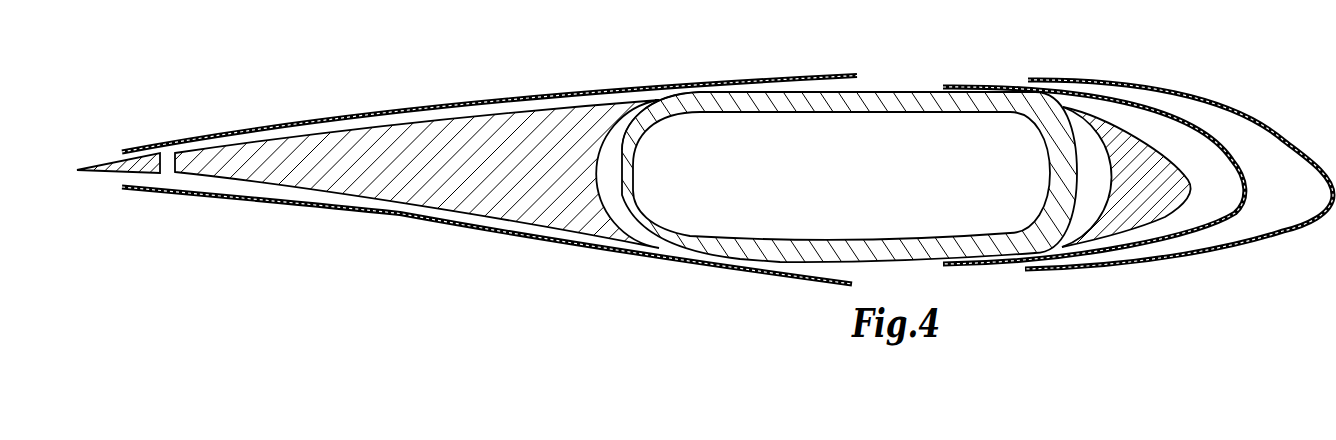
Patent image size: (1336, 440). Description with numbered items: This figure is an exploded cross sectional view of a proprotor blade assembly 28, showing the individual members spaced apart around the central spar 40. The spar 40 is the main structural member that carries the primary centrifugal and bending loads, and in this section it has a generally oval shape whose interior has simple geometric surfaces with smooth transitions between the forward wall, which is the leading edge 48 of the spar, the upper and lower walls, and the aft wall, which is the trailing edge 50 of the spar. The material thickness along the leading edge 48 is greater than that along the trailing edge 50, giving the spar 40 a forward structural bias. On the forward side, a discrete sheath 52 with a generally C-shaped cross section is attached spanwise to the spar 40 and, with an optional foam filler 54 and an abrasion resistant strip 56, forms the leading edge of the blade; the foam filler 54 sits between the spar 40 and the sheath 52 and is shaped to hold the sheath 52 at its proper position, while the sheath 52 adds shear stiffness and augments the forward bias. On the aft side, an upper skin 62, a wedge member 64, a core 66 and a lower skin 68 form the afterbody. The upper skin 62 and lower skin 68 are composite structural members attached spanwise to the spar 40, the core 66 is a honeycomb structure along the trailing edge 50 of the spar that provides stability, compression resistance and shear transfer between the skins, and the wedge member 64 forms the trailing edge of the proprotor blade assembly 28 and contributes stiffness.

The proprotor blade assembly 28 is at (668, 174).
The spar 40 is at (765, 257).
The leading edge of spar 48 is at (1078, 172).
The trailing edge of spar 50 is at (620, 175).
The sheath 52 is at (1180, 240).
The foam filler 54 is at (1117, 230).
The abrasion resistant strip 56 is at (1240, 250).
The upper skin 62 is at (533, 92).
The wedge member 64 is at (103, 172).
The core 66 is at (398, 193).
The lower skin 68 is at (513, 233).